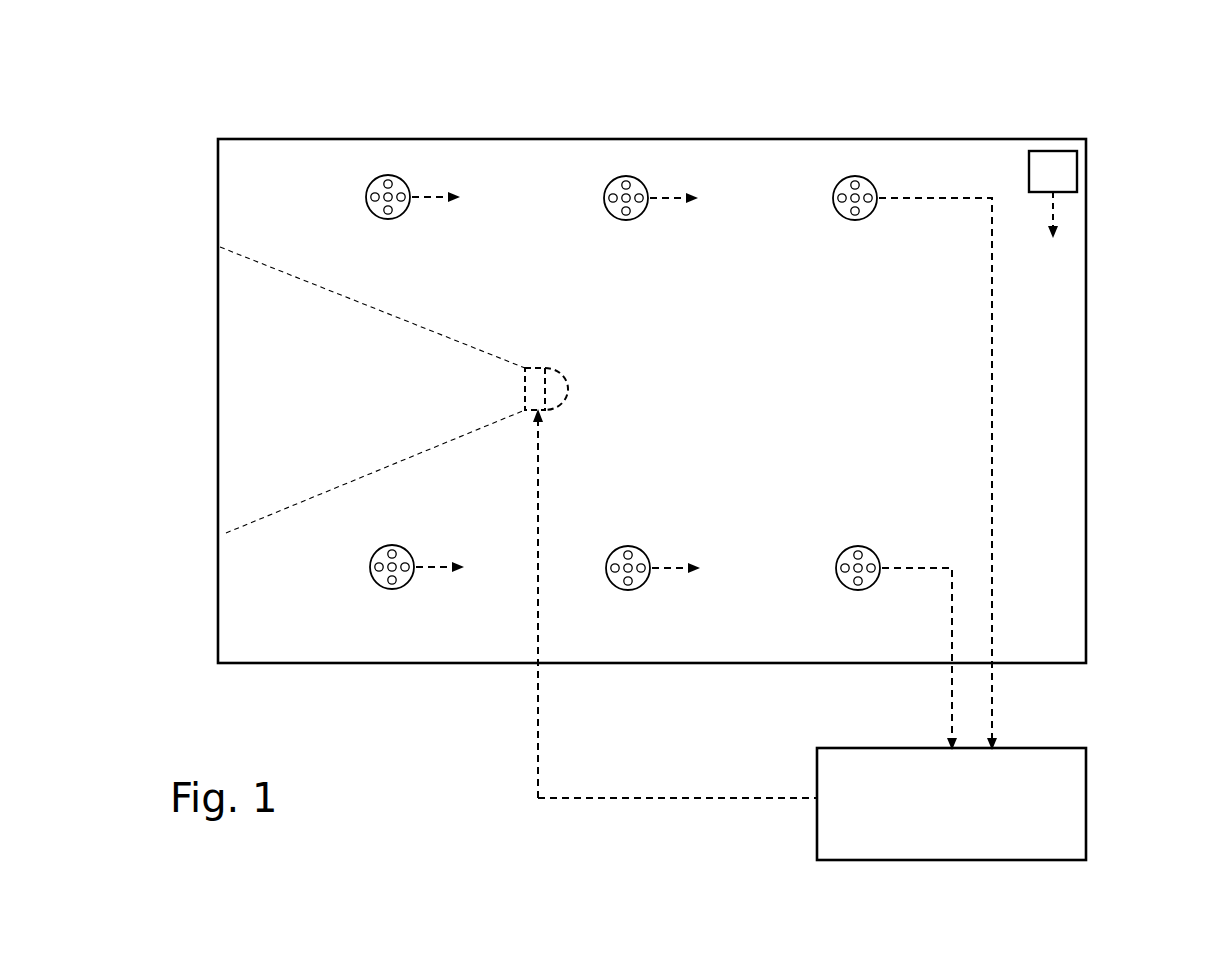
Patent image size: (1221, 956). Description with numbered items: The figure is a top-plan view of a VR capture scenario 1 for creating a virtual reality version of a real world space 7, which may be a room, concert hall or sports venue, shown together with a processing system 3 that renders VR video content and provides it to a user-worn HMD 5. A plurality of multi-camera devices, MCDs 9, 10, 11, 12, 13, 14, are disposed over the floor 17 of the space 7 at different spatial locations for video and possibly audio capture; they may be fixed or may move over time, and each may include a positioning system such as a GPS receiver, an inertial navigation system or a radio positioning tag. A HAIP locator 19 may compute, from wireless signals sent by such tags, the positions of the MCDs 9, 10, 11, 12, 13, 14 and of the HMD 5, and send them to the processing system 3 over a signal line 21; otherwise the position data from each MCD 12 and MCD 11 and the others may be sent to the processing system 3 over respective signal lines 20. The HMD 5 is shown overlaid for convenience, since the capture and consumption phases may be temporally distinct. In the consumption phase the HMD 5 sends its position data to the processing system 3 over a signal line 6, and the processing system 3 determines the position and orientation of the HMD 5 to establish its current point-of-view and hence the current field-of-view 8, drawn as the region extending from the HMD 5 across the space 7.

The VR capture scenario 1 is at (172, 60).
The processing system 3 is at (1086, 790).
The HMD 5 is at (535, 368).
The signal line 6 is at (538, 753).
The real world space 7 is at (1086, 472).
The field-of-view 8 is at (237, 360).
The MCD 9 is at (388, 175).
The MCD 10 is at (626, 176).
The MCD 11 is at (855, 176).
The MCD 12 is at (858, 589).
The MCD 13 is at (635, 589).
The MCD 14 is at (392, 589).
The floor 17 is at (281, 641).
The HAIP locator 19 is at (1060, 173).
The signal lines 20 is at (992, 510).
The signal line 21 is at (1060, 220).